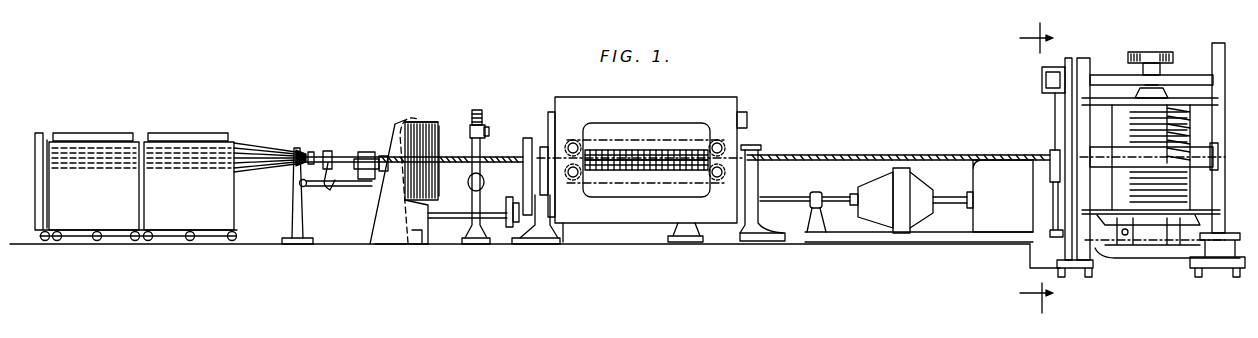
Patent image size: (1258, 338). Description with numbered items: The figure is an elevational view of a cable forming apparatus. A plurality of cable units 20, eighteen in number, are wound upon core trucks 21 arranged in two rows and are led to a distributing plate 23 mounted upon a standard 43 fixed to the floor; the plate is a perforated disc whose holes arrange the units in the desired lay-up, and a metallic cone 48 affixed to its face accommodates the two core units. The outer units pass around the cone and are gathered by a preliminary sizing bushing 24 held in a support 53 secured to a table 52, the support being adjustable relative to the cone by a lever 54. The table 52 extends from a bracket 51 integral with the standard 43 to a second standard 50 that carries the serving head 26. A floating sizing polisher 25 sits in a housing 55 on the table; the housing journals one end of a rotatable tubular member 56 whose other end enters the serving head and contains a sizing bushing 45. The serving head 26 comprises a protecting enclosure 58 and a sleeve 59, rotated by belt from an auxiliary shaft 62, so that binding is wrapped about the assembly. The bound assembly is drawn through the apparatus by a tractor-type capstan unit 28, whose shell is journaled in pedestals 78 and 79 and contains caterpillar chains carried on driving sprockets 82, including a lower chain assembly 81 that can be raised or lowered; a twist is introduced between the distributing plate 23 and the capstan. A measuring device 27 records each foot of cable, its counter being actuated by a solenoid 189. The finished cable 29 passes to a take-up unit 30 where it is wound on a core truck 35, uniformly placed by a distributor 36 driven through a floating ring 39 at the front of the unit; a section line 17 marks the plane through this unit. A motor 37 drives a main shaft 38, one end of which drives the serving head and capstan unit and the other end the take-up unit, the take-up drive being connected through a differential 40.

The section line 17- 17 is at (1028, 168).
The cable units 20 is at (238, 142).
The core trucks 21 is at (225, 211).
The distributing plate 23 is at (296, 150).
The preliminary sizing bushing 24 is at (326, 152).
The floating sizing polisher 25 is at (360, 152).
The serving head 26 is at (434, 120).
The measuring device 27 is at (476, 110).
The capstan unit 28 is at (559, 91).
The cable 29 is at (843, 154).
The take-up unit 30 is at (1096, 72).
The core truck 35 is at (1190, 105).
The distributor 36 is at (1050, 152).
The motor 37 is at (924, 185).
The main shaft 38 is at (801, 192).
The floating ring 39 is at (1067, 58).
The differential 40 is at (982, 165).
The standard 43 is at (293, 229).
The sizing bushing 45 is at (430, 120).
The metallic cone 48 is at (311, 152).
The standard 50 is at (392, 220).
The bracket 51 is at (299, 184).
The table 52 is at (372, 188).
The support 53 is at (326, 151).
The lever 54 is at (330, 190).
The housing 55 is at (383, 156).
The rotatable tubular member 56 is at (399, 134).
The protecting enclosure 58 is at (441, 145).
The sleeve 59 is at (388, 218).
The auxiliary shaft 62 is at (469, 218).
The pedestal 78 is at (548, 210).
The pedestal 79 is at (747, 214).
The lower chain assembly 81 is at (655, 172).
The driving sprockets 82 is at (656, 148).
The solenoid 189 is at (489, 132).